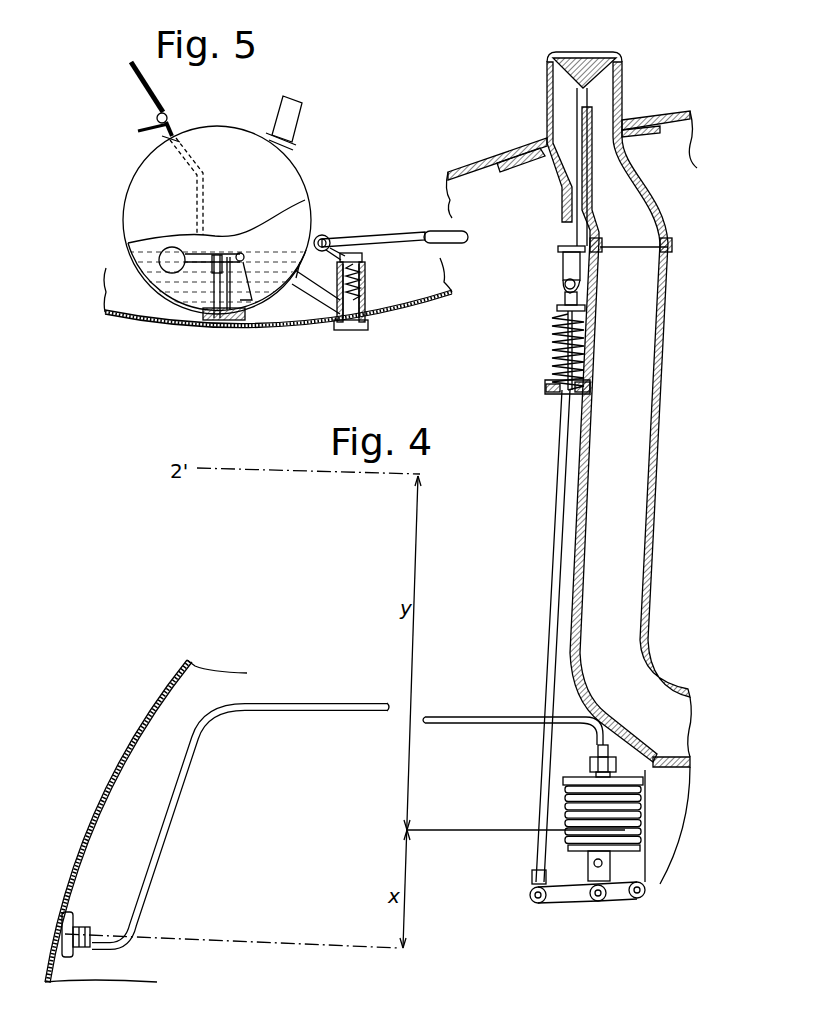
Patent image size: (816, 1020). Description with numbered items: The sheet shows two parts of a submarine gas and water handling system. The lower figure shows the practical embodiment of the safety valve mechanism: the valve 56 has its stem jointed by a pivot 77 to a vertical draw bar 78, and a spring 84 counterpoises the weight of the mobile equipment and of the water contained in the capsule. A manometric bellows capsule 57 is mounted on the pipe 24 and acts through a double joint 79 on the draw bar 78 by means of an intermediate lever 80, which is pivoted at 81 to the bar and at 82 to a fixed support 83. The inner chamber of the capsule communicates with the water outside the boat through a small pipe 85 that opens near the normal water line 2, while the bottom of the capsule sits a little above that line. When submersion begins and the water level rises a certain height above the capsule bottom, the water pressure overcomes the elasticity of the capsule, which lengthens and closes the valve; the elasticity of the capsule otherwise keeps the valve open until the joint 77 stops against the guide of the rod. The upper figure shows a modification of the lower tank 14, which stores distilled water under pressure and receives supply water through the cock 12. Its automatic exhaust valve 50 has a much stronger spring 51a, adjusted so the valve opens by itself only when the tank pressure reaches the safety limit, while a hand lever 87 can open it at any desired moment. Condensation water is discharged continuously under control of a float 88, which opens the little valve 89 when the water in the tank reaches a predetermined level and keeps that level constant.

In FIG. 4, the normal water line 2 is at (65, 934).
In FIG. 5, the cock 12 is at (165, 119).
In FIG. 5, the lower tank 14 is at (207, 148).
In FIG. 4, the pipe 24 is at (672, 715).
In FIG. 5, the automatic exhaust valve 50 is at (357, 330).
In FIG. 5, the spring 51a is at (371, 270).
In FIG. 4, the valve 56 is at (618, 62).
In FIG. 4, the manometric bellows capsule 57 is at (565, 815).
In FIG. 4, the pivot 77 is at (562, 284).
In FIG. 4, the vertical draw bar 78 is at (580, 506).
In FIG. 4, the double joint 79 is at (590, 877).
In FIG. 4, the intermediate lever 80 is at (580, 904).
In FIG. 4, the pivot 81 is at (530, 895).
In FIG. 4, the pivot 82 is at (637, 899).
In FIG. 4, the fixed support 83 is at (660, 777).
In FIG. 4, the spring 84 is at (552, 351).
In FIG. 4, the small pipe 85 is at (347, 710).
In FIG. 5, the hand lever 87 is at (402, 232).
In FIG. 5, the float 88 is at (172, 247).
In FIG. 5, the little valve 89 is at (200, 320).